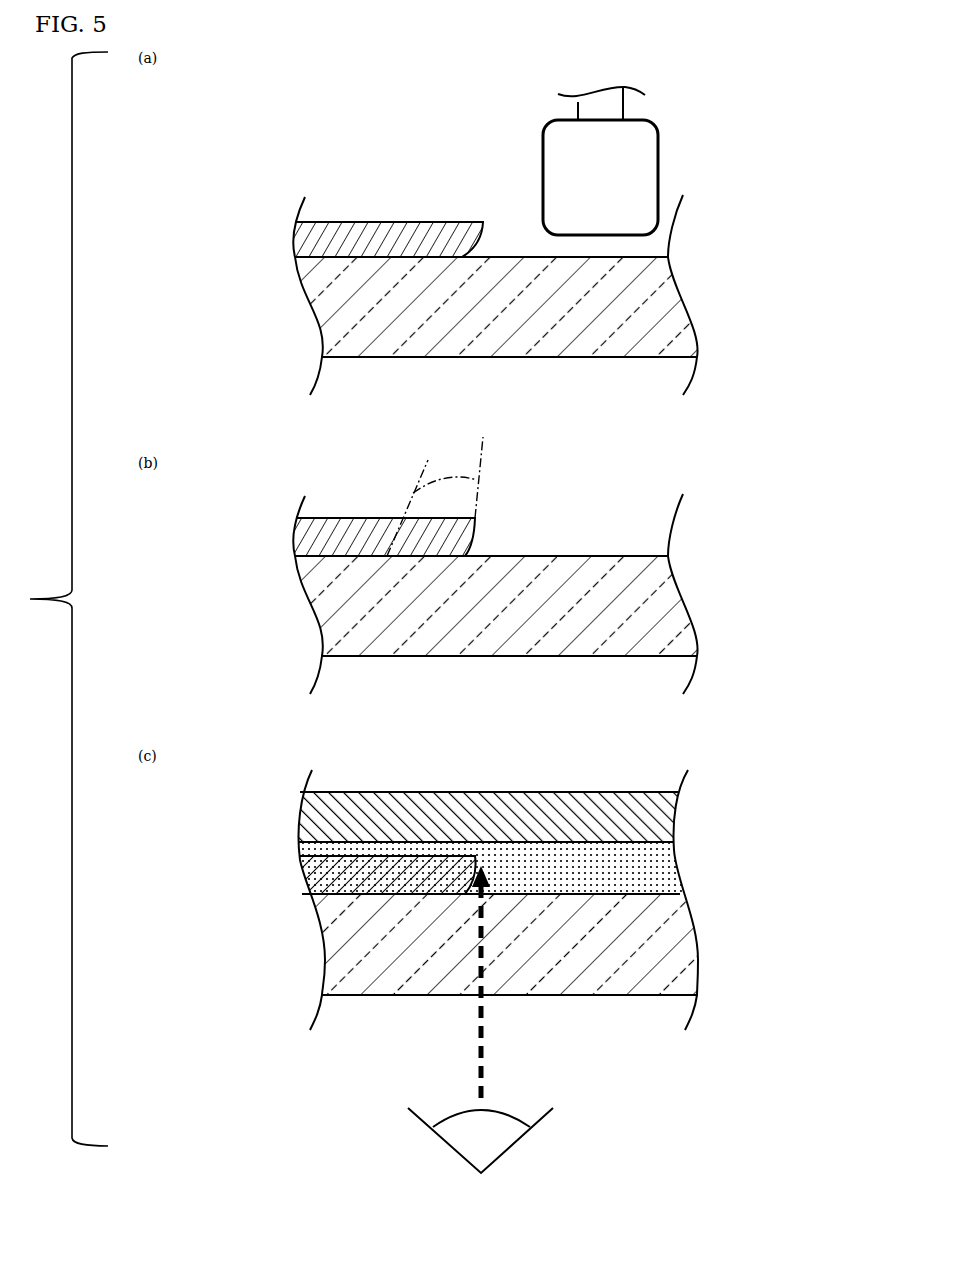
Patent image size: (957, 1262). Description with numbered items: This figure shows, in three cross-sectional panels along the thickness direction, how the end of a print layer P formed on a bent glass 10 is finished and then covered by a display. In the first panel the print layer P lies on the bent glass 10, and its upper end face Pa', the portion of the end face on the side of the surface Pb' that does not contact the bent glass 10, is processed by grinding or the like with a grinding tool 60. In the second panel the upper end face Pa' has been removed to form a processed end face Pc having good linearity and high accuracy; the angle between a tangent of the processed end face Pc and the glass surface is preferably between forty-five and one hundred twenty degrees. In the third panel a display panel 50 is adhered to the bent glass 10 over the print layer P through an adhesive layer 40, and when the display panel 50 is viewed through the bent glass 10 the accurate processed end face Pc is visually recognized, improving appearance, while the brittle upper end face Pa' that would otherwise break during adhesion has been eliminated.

The bent glass 10 is at (350, 330).
The adhesive layer 40 is at (642, 870).
The display panel 50 is at (648, 810).
The grinding tool 60 is at (658, 132).
The print layer P is at (358, 228).
The surface of the print layer not contacting the bent glass Pb' is at (360, 333).
The upper end face Pa' is at (488, 196).
The processed end face Pc is at (477, 518).